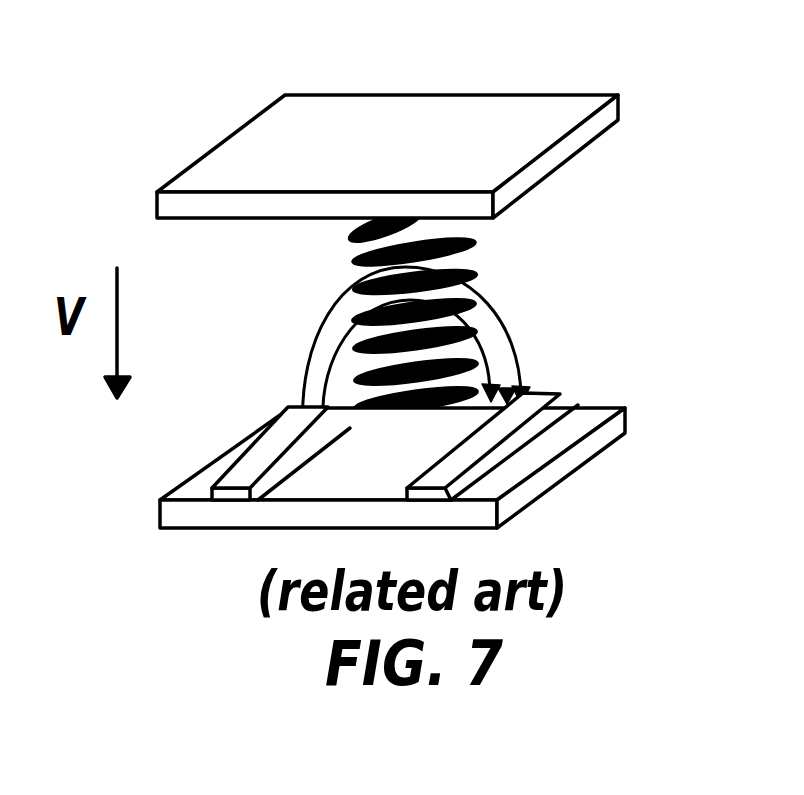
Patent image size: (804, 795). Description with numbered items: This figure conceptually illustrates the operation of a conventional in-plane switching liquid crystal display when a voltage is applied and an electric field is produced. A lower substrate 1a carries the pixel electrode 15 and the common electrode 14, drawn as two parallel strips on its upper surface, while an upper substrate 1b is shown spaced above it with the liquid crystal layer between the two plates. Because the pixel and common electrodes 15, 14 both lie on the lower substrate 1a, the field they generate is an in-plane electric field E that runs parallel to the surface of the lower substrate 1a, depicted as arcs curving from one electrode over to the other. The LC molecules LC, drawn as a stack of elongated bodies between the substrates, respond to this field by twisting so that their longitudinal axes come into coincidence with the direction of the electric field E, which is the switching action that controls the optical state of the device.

The lower substrate 1a is at (610, 440).
The upper substrate 1b is at (618, 112).
The common electrode 14 is at (553, 393).
The pixel electrode 15 is at (258, 444).
The LC molecules LC is at (475, 246).
The in-plane electric field E is at (522, 360).